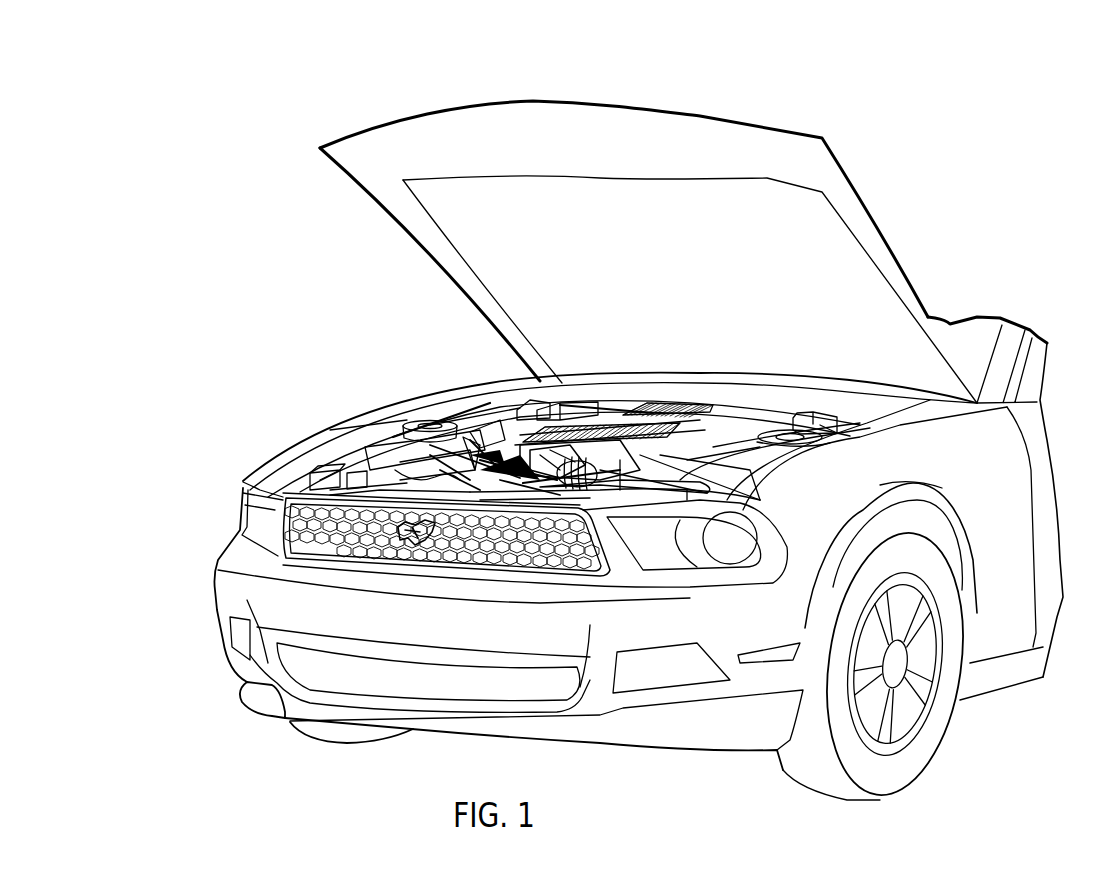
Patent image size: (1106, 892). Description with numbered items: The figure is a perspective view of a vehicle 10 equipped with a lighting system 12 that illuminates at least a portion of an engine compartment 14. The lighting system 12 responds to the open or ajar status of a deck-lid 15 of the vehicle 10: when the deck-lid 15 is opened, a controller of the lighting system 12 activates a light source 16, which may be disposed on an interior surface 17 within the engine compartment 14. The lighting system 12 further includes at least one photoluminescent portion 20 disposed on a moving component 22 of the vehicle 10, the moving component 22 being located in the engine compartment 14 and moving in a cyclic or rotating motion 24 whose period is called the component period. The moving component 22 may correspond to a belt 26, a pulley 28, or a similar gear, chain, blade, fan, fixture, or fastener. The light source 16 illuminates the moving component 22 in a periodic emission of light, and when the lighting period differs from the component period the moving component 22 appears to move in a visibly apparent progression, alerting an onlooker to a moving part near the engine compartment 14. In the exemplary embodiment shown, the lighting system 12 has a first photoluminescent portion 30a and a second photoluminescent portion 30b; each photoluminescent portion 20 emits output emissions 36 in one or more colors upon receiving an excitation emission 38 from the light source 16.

The vehicle 10 is at (921, 102).
The lighting system 12 is at (390, 386).
The engine compartment 14 is at (693, 388).
The deck-lid 15 is at (835, 177).
The light source 16 is at (340, 568).
The interior surface 17 is at (290, 508).
The photoluminescent portion 20 is at (611, 544).
The moving component 22 is at (570, 487).
The cyclic or rotating motion 24 is at (489, 430).
The belt 26 is at (566, 374).
The pulley 28 is at (501, 369).
The first photoluminescent portion 30a is at (545, 455).
The second photoluminescent portion 30b is at (512, 425).
The output emissions 36 is at (707, 493).
The excitation emission 38 is at (370, 433).